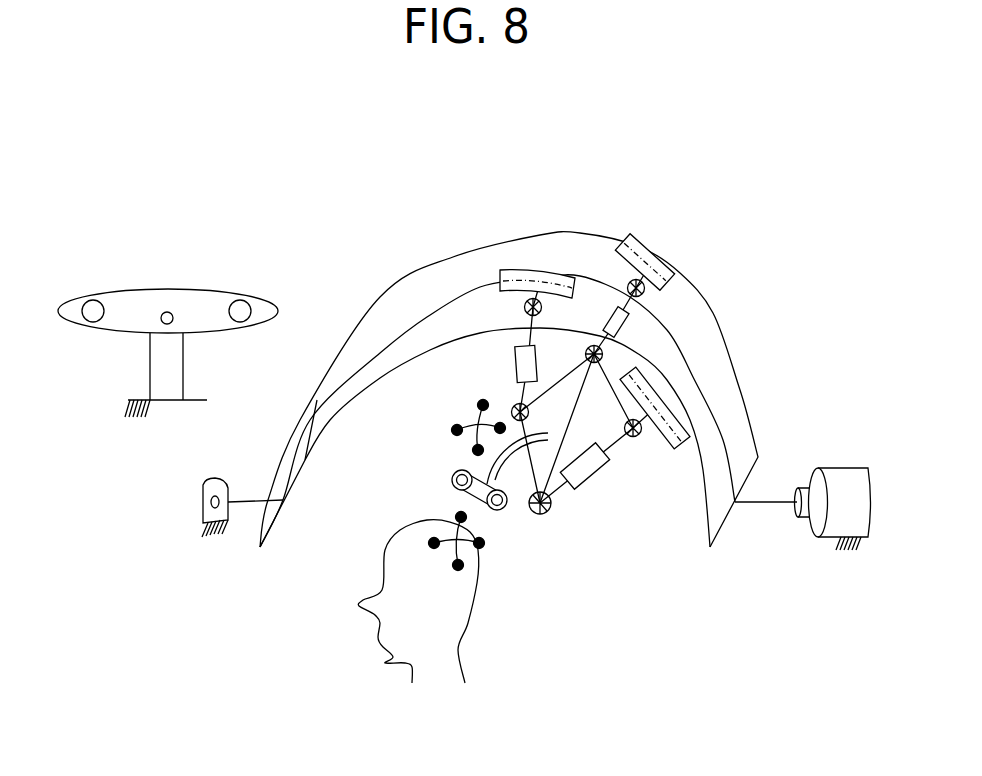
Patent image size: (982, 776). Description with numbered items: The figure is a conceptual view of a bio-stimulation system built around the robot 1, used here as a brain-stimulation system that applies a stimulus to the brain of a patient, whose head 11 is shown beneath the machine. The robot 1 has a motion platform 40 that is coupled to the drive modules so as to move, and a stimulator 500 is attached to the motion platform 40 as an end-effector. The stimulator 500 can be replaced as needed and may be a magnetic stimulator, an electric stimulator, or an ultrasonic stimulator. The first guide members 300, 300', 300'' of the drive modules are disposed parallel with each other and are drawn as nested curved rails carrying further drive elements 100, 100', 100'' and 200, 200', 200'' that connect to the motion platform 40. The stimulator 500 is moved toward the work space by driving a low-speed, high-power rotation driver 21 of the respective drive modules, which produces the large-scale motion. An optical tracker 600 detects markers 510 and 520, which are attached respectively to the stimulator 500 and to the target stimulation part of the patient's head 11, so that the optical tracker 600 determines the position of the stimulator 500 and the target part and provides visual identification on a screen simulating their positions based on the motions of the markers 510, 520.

The robot 1 is at (388, 183).
The head of user 11 is at (450, 648).
The rotation driver 21 is at (845, 482).
The motion platform 40 is at (572, 393).
The first sensor 100 is at (655, 435).
The second sensor 100' is at (544, 241).
The third sensor 100'' is at (660, 235).
The first actuator 200 is at (587, 490).
The second actuator 200' is at (478, 363).
The third actuator 200'' is at (685, 311).
The first guide member 300 is at (485, 458).
The first guide member 300' is at (531, 411).
The first guide member 300'' is at (536, 389).
The stimulator 500 is at (510, 515).
The marker 510 is at (457, 430).
The marker 520 is at (460, 567).
The optical tracker 600 is at (203, 300).